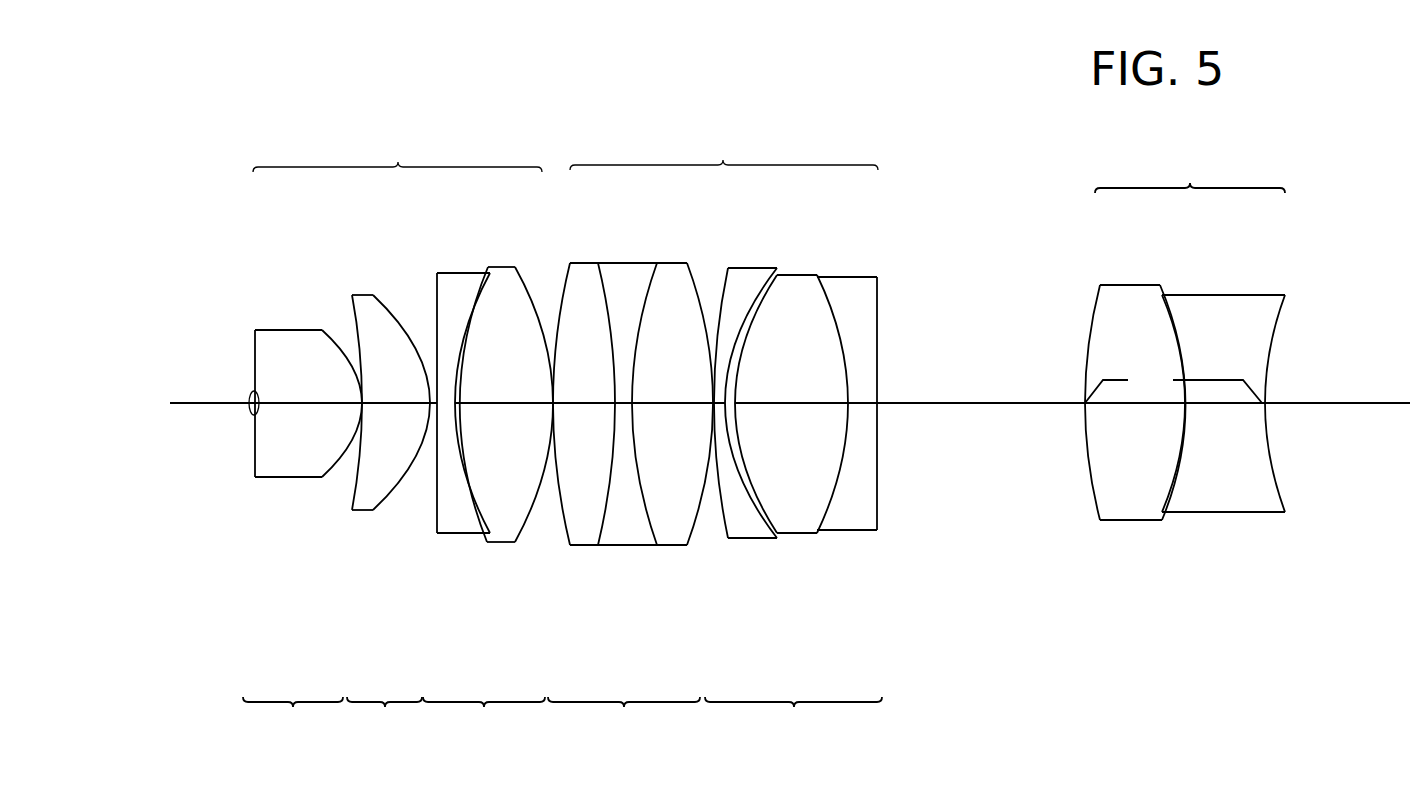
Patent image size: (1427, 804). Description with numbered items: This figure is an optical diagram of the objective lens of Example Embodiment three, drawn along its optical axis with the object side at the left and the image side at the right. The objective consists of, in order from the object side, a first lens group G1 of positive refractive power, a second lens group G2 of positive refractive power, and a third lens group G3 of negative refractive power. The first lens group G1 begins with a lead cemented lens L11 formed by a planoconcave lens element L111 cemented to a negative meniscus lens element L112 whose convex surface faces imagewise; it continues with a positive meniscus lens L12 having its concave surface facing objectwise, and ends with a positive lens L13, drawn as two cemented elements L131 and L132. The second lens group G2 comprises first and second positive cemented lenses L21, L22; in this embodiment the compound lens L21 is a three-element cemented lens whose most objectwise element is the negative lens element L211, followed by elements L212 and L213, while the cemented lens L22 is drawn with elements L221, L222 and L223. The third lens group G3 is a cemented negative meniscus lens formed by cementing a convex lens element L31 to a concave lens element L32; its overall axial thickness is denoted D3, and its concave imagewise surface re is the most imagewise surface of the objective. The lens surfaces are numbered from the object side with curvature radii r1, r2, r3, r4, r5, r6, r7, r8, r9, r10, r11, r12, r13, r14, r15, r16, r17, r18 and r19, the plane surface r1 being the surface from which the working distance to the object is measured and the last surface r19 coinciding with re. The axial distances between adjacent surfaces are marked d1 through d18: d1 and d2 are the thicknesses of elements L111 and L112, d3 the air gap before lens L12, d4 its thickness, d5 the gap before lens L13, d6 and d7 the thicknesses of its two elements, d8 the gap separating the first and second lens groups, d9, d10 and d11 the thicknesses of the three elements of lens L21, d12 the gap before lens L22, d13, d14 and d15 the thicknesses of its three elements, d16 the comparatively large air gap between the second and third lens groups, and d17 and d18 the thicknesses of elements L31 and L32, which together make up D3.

The first lens group G1 is at (791, 433).
The second lens group G2 is at (733, 433).
The third lens group G3 is at (1229, 352).
The lead cemented lens L11 is at (267, 506).
The positive meniscus lens L12 is at (338, 255).
The positive lens L13 is at (461, 480).
The first positive cemented lens L21 is at (614, 470).
The second positive cemented lens L22 is at (831, 478).
The planoconcave lens element L111 is at (218, 370).
The negative meniscus lens element L112 is at (307, 416).
The negative meniscus lens element L131 is at (435, 432).
The biconvex lens element L132 is at (491, 401).
The negative lens element L211 is at (549, 398).
The second element of cemented triplet L212 is at (611, 402).
The third element of cemented triplet L213 is at (675, 439).
The negative meniscus lens element L221 is at (803, 406).
The biconvex lens element L222 is at (821, 392).
The plano lens element L223 is at (887, 394).
The convex lens element L31 is at (1132, 395).
The concave lens element L32 is at (1229, 397).
The overall axial thickness of the cemented meniscus lens D3 is at (1173, 382).
The first lens surface r1 is at (250, 410).
The second lens surface r2 is at (258, 410).
The third lens surface r3 is at (333, 477).
The fourth lens surface r4 is at (357, 478).
The fifth lens surface r5 is at (378, 510).
The sixth lens surface r6 is at (437, 533).
The seventh lens surface r7 is at (488, 537).
The eighth lens surface r8 is at (512, 542).
The ninth lens surface r9 is at (568, 510).
The tenth lens surface r10 is at (600, 545).
The eleventh lens surface r11 is at (662, 548).
The twelfth lens surface r12 is at (702, 535).
The thirteenth lens surface r13 is at (733, 535).
The fourteenth lens surface r14 is at (785, 535).
The fifteenth lens surface r15 is at (845, 500).
The sixteenth lens surface r16 is at (880, 468).
The seventeenth lens surface r17 is at (1088, 470).
The eighteenth lens surface r18 is at (1178, 470).
The nineteenth lens surface r19 is at (1275, 470).
The most imagewise concave surface re is at (1282, 472).
The axial thickness of element L111 d1 is at (252, 407).
The axial thickness of element L112 d2 is at (317, 410).
The air gap between lens L11 and lens L12 d3 is at (362, 415).
The axial thickness of lens L12 d4 is at (400, 410).
The air gap between lens L12 and lens L13 d5 is at (432, 412).
The axial thickness of first glass of lens L13 d6 is at (460, 415).
The axial thickness of second glass of lens L13 d7 is at (515, 410).
The air gap between first and second lens groups d8 is at (553, 410).
The axial thickness of element L211 d9 is at (572, 408).
The axial thickness of second element of lens L21 d10 is at (622, 410).
The axial thickness of third element of lens L21 d11 is at (662, 408).
The air gap between lens L21 and lens L22 d12 is at (716, 410).
The axial thickness of first element of lens L22 d13 is at (722, 410).
The axial thickness of second element of lens L22 d14 is at (790, 408).
The axial thickness of third element of lens L22 d15 is at (862, 407).
The air gap between second and third lens groups d16 is at (983, 405).
The axial thickness of element L31 d17 is at (1128, 408).
The axial thickness of element L32 d18 is at (1225, 408).